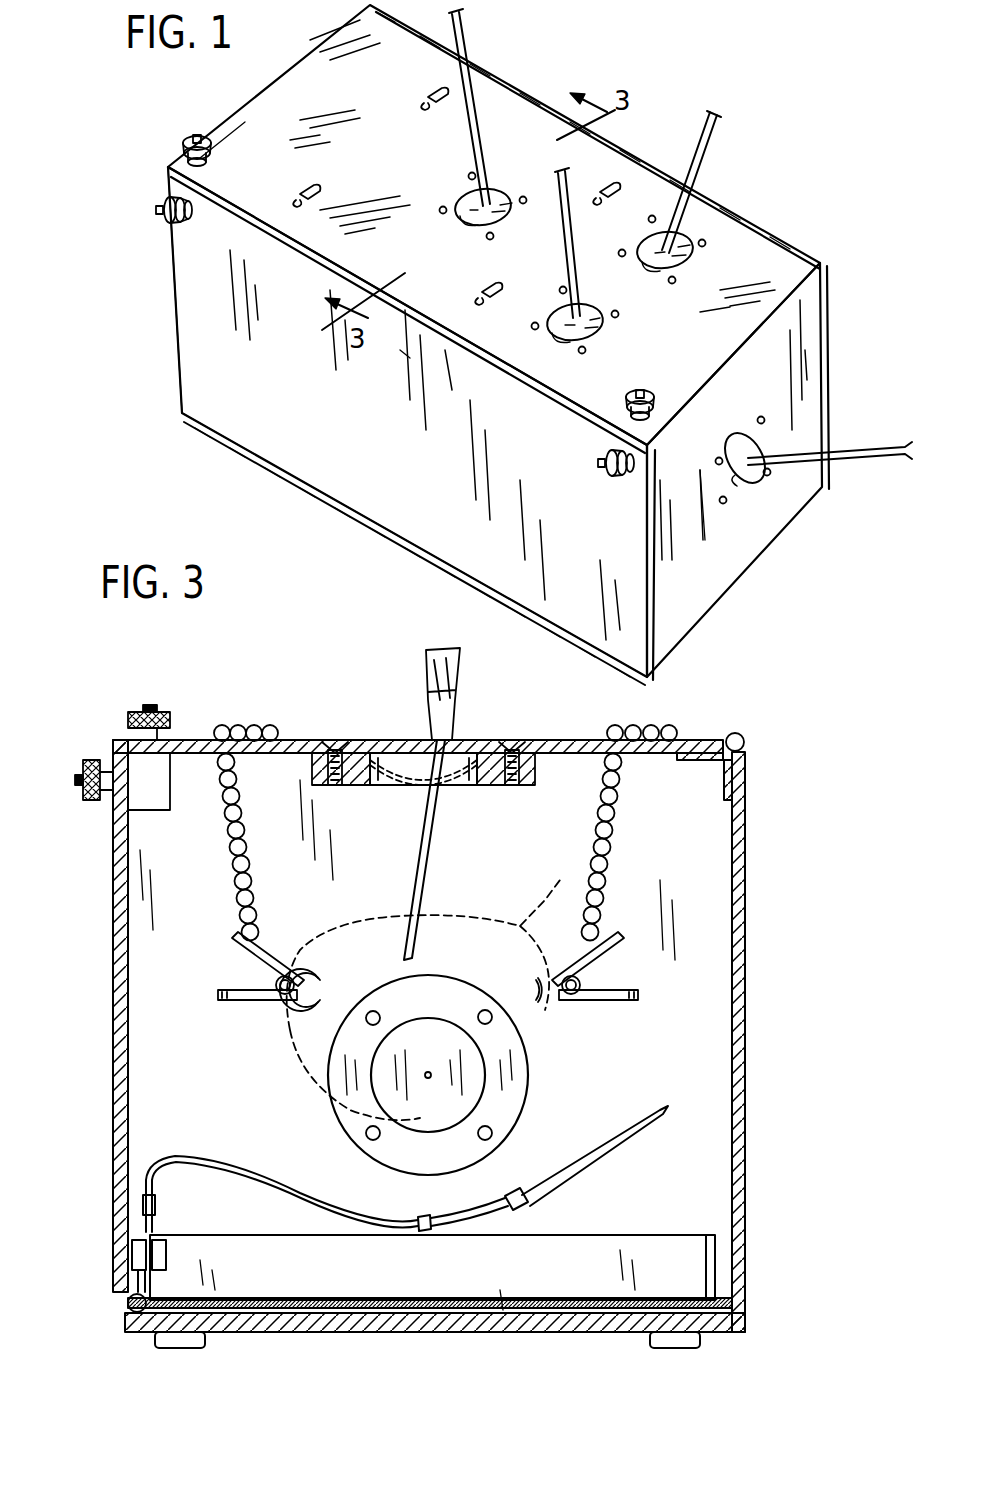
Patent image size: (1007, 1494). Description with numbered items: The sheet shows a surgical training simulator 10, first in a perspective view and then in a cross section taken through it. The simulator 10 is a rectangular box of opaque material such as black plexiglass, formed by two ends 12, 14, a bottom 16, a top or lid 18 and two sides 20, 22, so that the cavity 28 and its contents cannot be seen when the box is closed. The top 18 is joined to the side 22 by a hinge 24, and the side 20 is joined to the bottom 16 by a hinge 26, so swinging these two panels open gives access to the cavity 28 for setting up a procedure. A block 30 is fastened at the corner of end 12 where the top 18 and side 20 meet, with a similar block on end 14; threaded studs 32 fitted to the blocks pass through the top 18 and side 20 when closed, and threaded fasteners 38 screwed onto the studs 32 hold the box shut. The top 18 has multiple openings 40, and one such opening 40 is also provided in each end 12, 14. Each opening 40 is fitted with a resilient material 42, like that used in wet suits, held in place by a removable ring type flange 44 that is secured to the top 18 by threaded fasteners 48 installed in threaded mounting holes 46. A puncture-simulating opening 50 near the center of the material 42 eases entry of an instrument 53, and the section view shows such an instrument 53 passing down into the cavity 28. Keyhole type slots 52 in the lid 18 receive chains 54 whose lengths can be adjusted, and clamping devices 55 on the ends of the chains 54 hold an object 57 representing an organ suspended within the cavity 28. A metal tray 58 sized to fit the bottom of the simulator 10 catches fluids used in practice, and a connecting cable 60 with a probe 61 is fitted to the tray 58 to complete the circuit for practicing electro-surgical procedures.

In FIG. 1, the simulator 10 is at (156, 122).
In FIG. 3, the simulator 10 is at (294, 696).
In FIG. 1, the end 12 is at (790, 370).
In FIG. 1, the end 14 is at (176, 342).
In FIG. 3, the end 14 is at (200, 977).
In FIG. 1, the bottom 16 is at (713, 608).
In FIG. 3, the bottom 16 is at (520, 1335).
In FIG. 1, the top (lid) 18 is at (406, 167).
In FIG. 3, the top (lid) 18 is at (566, 740).
In FIG. 1, the side 20 is at (442, 439).
In FIG. 3, the side 20 is at (113, 940).
In FIG. 1, the side 22 is at (826, 320).
In FIG. 3, the side 22 is at (747, 1001).
In FIG. 1, the hinge 24 is at (770, 225).
In FIG. 3, the hinge 24 is at (745, 735).
In FIG. 1, the hinge 26 is at (240, 425).
In FIG. 3, the hinge 26 is at (128, 1303).
In FIG. 3, the cavity 28 is at (700, 930).
In FIG. 3, the block 30 is at (165, 797).
In FIG. 1, the threaded stud 32 is at (197, 133).
In FIG. 3, the threaded stud 32 is at (150, 705).
In FIG. 1, the threaded fastener 38 is at (212, 150).
In FIG. 3, the threaded fastener 38 is at (135, 714).
In FIG. 1, the opening 40 is at (505, 190).
In FIG. 3, the opening 40 is at (376, 745).
In FIG. 1, the resilient material 42 is at (460, 222).
In FIG. 3, the resilient material 42 is at (397, 778).
In FIG. 3, the ring type flange 44 is at (355, 790).
In FIG. 3, the bolt hole 46 is at (372, 1012).
In FIG. 1, the threaded fastener 48 is at (442, 206).
In FIG. 3, the threaded fastener 48 is at (335, 748).
In FIG. 3, the puncture-simulating opening 50 is at (440, 760).
In FIG. 1, the keyhole type slot 52 is at (425, 97).
In FIG. 1, the instrument 53 is at (470, 85).
In FIG. 3, the instrument 53 is at (425, 850).
In FIG. 3, the chain 54 is at (235, 865).
In FIG. 3, the clamping device 55 is at (253, 1002).
In FIG. 3, the object 57 is at (500, 905).
In FIG. 3, the metal tray 58 is at (706, 1255).
In FIG. 3, the connecting cable 60 is at (225, 1165).
In FIG. 3, the probe 61 is at (632, 1128).